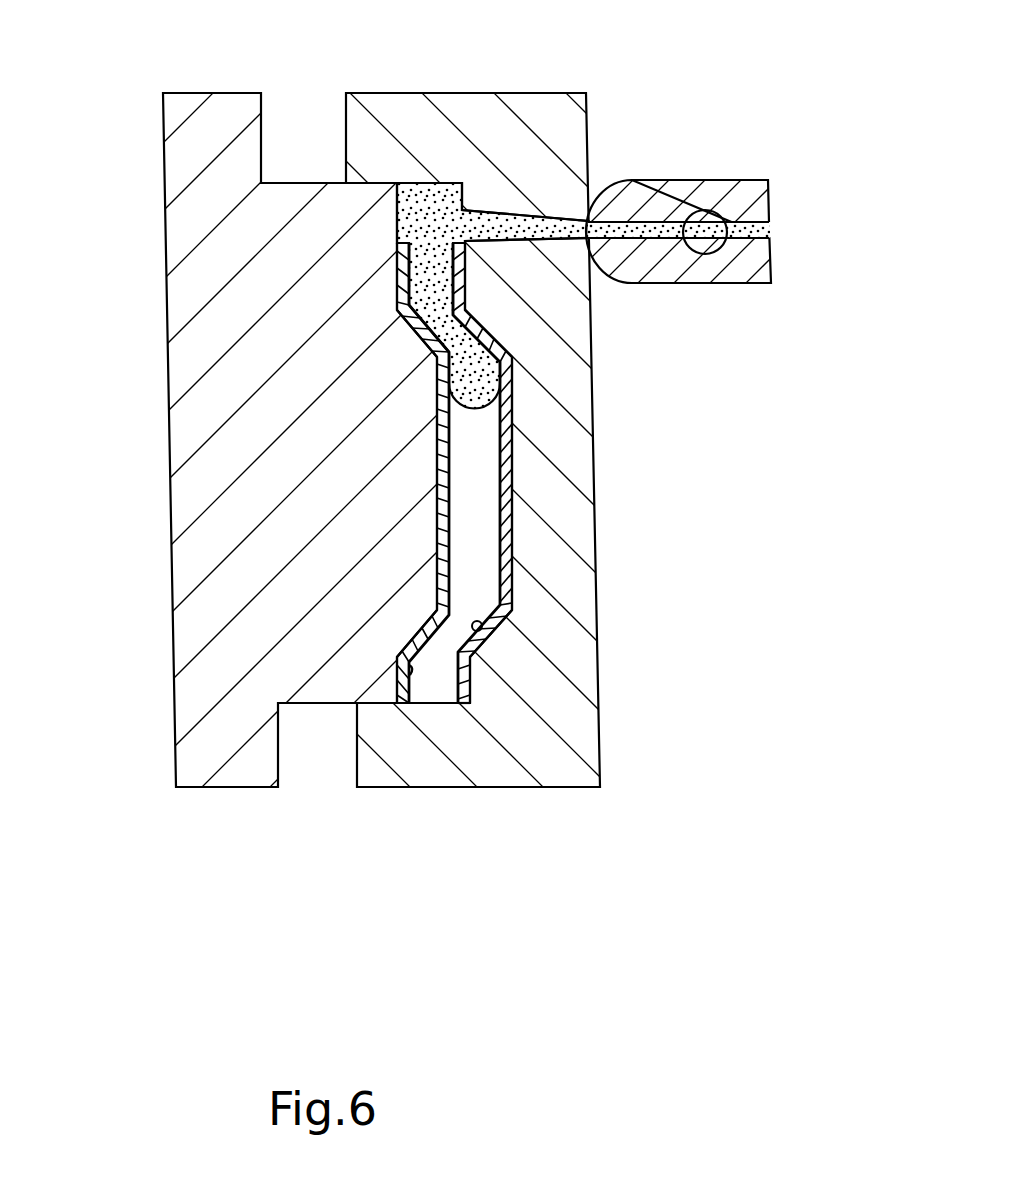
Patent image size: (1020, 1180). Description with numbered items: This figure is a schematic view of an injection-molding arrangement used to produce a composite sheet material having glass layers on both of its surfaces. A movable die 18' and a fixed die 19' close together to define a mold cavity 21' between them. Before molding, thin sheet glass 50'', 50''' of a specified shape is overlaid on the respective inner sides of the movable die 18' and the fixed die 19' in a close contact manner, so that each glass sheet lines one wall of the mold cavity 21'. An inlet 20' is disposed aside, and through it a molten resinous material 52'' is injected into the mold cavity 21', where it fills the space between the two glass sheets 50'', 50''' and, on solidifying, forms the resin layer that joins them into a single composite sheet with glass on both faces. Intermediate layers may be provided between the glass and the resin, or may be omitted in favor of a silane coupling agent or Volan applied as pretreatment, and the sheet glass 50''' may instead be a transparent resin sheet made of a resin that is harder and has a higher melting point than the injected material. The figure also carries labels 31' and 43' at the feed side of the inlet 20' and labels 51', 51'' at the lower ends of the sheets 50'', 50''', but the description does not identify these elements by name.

The movable die 18' is at (510, 440).
The fixed die 19' is at (510, 500).
The inlet 20' is at (489, 136).
The mold cavity 21' is at (555, 473).
The nozzle 31' is at (709, 169).
The nozzle bore 43' is at (717, 295).
The thin sheet glass 50'' is at (267, 473).
The thin sheet glass 50''' is at (586, 473).
The lower end of left sleeve 51' is at (426, 767).
The lower end of right sleeve 51'' is at (530, 740).
The molten resinous material 52'' is at (535, 299).